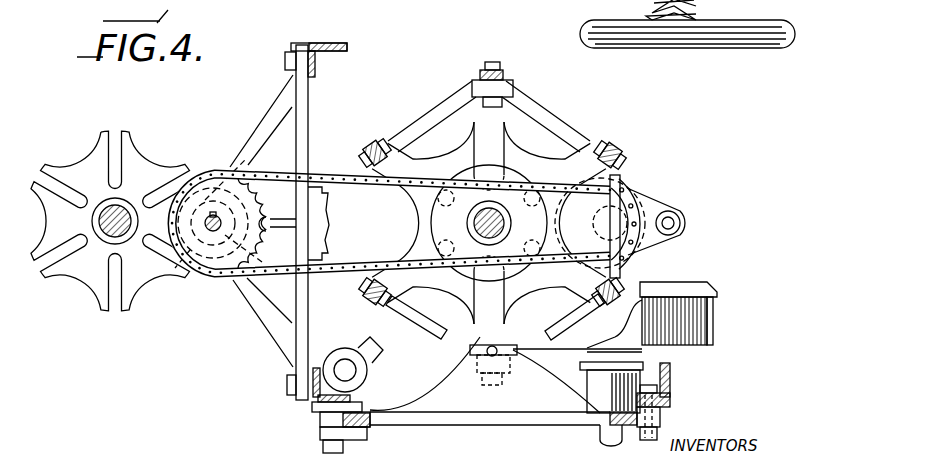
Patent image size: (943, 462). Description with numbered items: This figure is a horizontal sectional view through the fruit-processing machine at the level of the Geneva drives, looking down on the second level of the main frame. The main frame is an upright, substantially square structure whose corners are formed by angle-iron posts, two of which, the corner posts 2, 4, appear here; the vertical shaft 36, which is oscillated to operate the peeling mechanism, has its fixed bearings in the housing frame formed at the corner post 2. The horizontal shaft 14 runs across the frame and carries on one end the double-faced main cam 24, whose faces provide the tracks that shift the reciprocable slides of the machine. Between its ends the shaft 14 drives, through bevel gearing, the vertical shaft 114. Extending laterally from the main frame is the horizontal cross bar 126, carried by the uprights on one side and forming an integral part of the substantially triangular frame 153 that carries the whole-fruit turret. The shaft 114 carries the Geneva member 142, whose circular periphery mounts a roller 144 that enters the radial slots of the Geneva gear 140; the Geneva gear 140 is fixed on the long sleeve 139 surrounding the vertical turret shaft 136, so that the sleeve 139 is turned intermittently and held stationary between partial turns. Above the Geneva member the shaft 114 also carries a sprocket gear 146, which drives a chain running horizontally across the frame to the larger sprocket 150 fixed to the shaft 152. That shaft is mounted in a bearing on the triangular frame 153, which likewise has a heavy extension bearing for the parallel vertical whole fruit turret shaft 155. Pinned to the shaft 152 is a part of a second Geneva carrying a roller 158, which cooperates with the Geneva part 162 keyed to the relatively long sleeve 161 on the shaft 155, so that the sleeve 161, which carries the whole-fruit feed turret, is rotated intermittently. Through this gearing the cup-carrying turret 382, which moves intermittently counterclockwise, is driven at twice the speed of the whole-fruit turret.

The corner post 2 is at (296, 404).
The corner post 4 is at (670, 382).
The horizontal shaft 14 is at (600, 435).
The main cam 24 is at (700, 317).
The vertical shaft 36 is at (347, 372).
The cup-carrying turret 382 is at (421, 108).
The vertical shaft 114 is at (628, 184).
The horizontal cross bar 126 is at (302, 108).
The turret shaft 136 is at (484, 210).
The sleeve 139 is at (497, 210).
The Geneva gear 140 is at (576, 130).
The Geneva member 142 is at (648, 248).
The roller 144 is at (681, 223).
The sprocket gear 146 is at (638, 213).
The sprocket 150 is at (212, 268).
The shaft 152 is at (210, 214).
The triangular frame 153 is at (263, 126).
The whole fruit turret shaft 155 is at (121, 211).
The roller 158 is at (309, 222).
The sleeve 161 is at (105, 211).
The Geneva part 162 is at (92, 282).